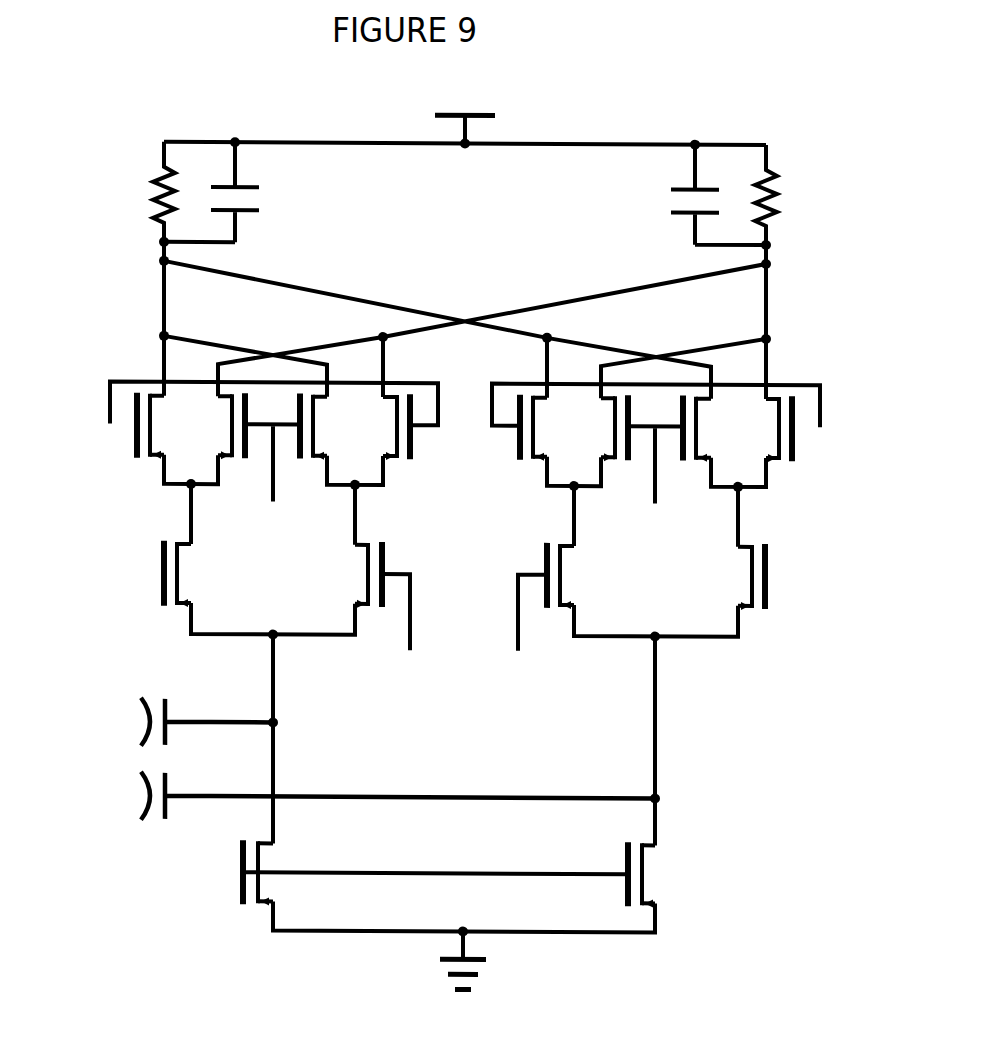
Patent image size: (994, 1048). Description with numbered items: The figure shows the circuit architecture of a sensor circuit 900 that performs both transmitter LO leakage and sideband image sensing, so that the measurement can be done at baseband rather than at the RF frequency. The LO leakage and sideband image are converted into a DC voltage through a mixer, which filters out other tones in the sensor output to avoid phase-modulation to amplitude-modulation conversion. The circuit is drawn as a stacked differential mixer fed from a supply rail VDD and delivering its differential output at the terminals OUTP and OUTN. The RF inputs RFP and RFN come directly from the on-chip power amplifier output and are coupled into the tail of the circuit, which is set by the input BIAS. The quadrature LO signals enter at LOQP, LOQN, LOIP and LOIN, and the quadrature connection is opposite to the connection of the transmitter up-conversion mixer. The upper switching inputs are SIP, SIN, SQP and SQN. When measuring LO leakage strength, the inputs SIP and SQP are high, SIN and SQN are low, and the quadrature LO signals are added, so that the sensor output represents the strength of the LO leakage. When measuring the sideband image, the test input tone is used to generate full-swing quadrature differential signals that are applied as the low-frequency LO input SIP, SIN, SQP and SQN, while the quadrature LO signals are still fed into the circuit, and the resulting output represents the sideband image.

The sensor circuit 900 is at (596, 112).
The supply voltage rail VDD is at (465, 117).
The positive sensor output OUTP is at (164, 260).
The negative sensor output OUTN is at (877, 260).
The in-phase positive input SIP is at (137, 423).
The in-phase negative input SIN is at (273, 500).
The quadrature positive input SQP is at (877, 423).
The quadrature negative input SQN is at (655, 500).
The quadrature LO positive input LOQP is at (164, 572).
The quadrature LO negative input LOQN is at (410, 648).
The in-phase LO positive input LOIP is at (877, 572).
The in-phase LO negative input LOIN is at (518, 648).
The RF positive input RFP is at (150, 721).
The RF negative input RFN is at (150, 795).
The bias input BIAS is at (243, 871).